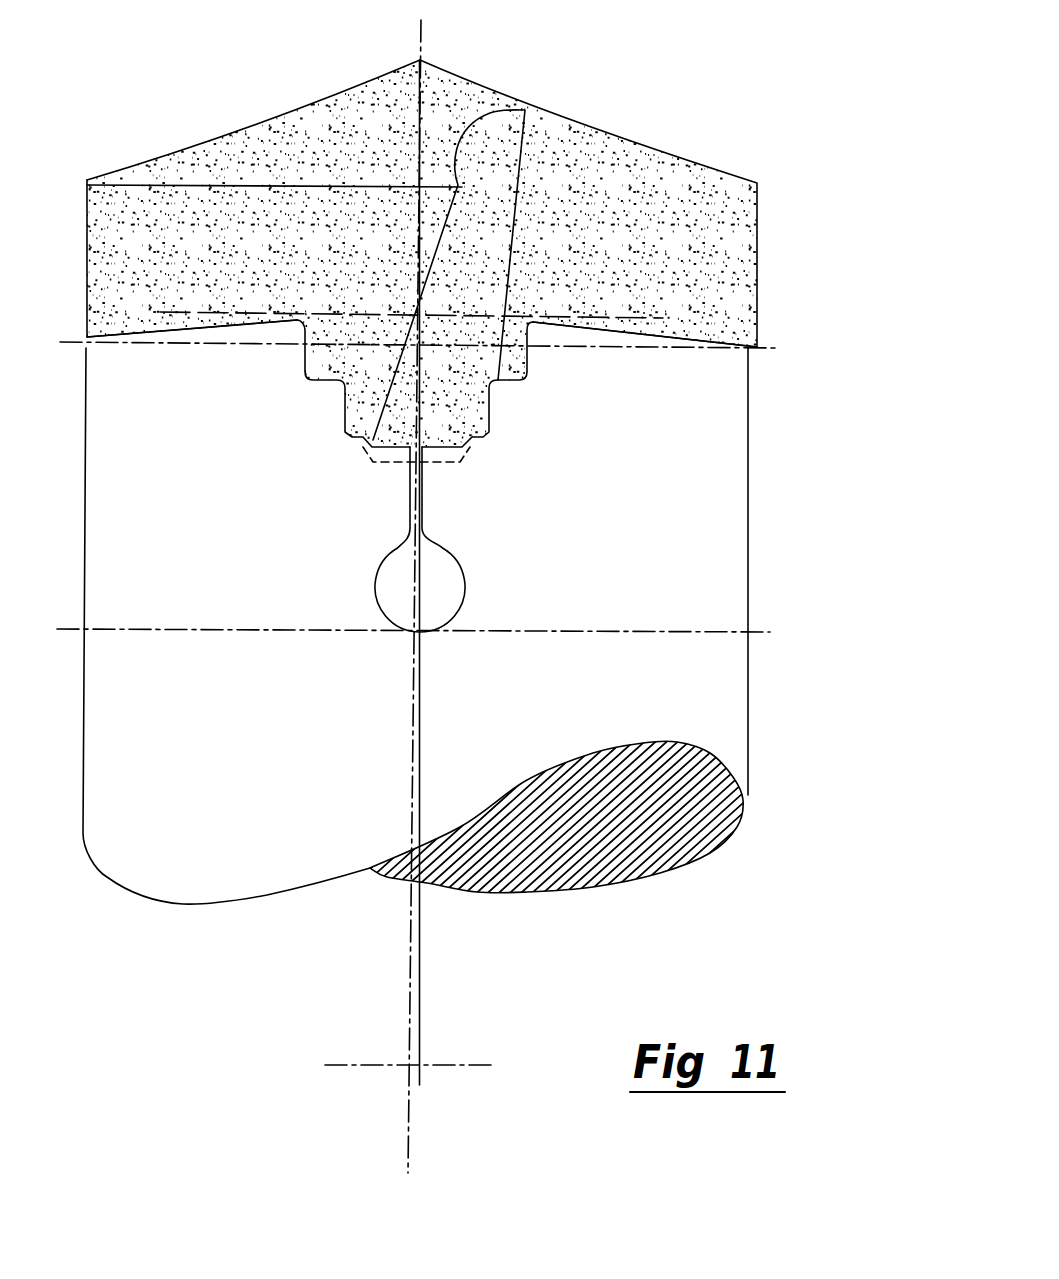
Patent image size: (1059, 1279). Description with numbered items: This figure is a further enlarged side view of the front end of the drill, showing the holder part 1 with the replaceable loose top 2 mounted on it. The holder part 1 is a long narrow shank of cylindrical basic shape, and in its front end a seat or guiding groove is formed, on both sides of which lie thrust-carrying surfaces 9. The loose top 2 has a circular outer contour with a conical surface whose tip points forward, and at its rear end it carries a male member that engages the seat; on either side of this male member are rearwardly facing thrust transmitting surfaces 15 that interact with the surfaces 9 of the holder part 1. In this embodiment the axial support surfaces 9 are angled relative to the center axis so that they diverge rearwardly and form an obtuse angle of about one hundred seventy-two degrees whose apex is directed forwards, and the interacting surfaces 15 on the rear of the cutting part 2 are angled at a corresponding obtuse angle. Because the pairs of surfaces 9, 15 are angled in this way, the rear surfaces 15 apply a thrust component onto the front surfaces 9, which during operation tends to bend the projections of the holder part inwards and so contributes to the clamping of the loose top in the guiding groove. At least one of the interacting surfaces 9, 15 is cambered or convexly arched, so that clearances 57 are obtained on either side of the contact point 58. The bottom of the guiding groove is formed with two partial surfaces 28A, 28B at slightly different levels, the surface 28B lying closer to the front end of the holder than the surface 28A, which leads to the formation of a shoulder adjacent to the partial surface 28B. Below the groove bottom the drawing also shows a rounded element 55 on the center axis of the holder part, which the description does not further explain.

The holder part 1 is at (733, 708).
The loose top 2 is at (677, 190).
The thrust-carrying surfaces 9 is at (162, 330).
The thrust transmitting surfaces 15 is at (247, 322).
The partial surface 28A is at (447, 437).
The partial surface 28B is at (440, 463).
The ball joint 55 is at (437, 585).
The clearances 57 is at (560, 325).
The contact point 58 is at (663, 333).